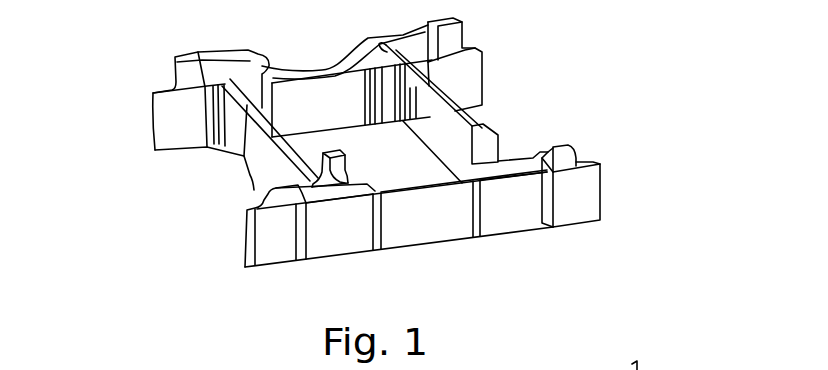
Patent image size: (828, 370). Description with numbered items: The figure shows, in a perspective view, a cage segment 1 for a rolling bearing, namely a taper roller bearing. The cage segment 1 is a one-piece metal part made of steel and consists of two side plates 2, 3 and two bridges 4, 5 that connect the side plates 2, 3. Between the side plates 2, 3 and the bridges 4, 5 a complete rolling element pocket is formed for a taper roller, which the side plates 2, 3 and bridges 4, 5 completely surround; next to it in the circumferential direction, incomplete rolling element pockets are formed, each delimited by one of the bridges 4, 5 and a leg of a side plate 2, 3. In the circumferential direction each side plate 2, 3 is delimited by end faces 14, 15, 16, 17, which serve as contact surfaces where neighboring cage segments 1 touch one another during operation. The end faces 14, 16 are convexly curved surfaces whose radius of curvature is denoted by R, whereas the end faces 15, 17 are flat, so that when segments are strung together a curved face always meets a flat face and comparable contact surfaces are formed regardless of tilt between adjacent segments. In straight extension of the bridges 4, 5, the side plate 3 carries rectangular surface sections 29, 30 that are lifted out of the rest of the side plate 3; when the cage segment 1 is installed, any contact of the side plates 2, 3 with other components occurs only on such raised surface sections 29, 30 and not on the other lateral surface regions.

The cage segment 1 is at (600, 63).
The side plate 2 is at (313, 70).
The side plate 3 is at (440, 215).
The bridge 4 is at (266, 158).
The bridge 5 is at (473, 124).
The end face 14 is at (247, 241).
The end face 15 is at (605, 182).
The end face 16 is at (149, 120).
The end face 17 is at (485, 76).
The surface section 29 is at (350, 232).
The surface section 30 is at (513, 212).
The radius of curvature R is at (251, 228).